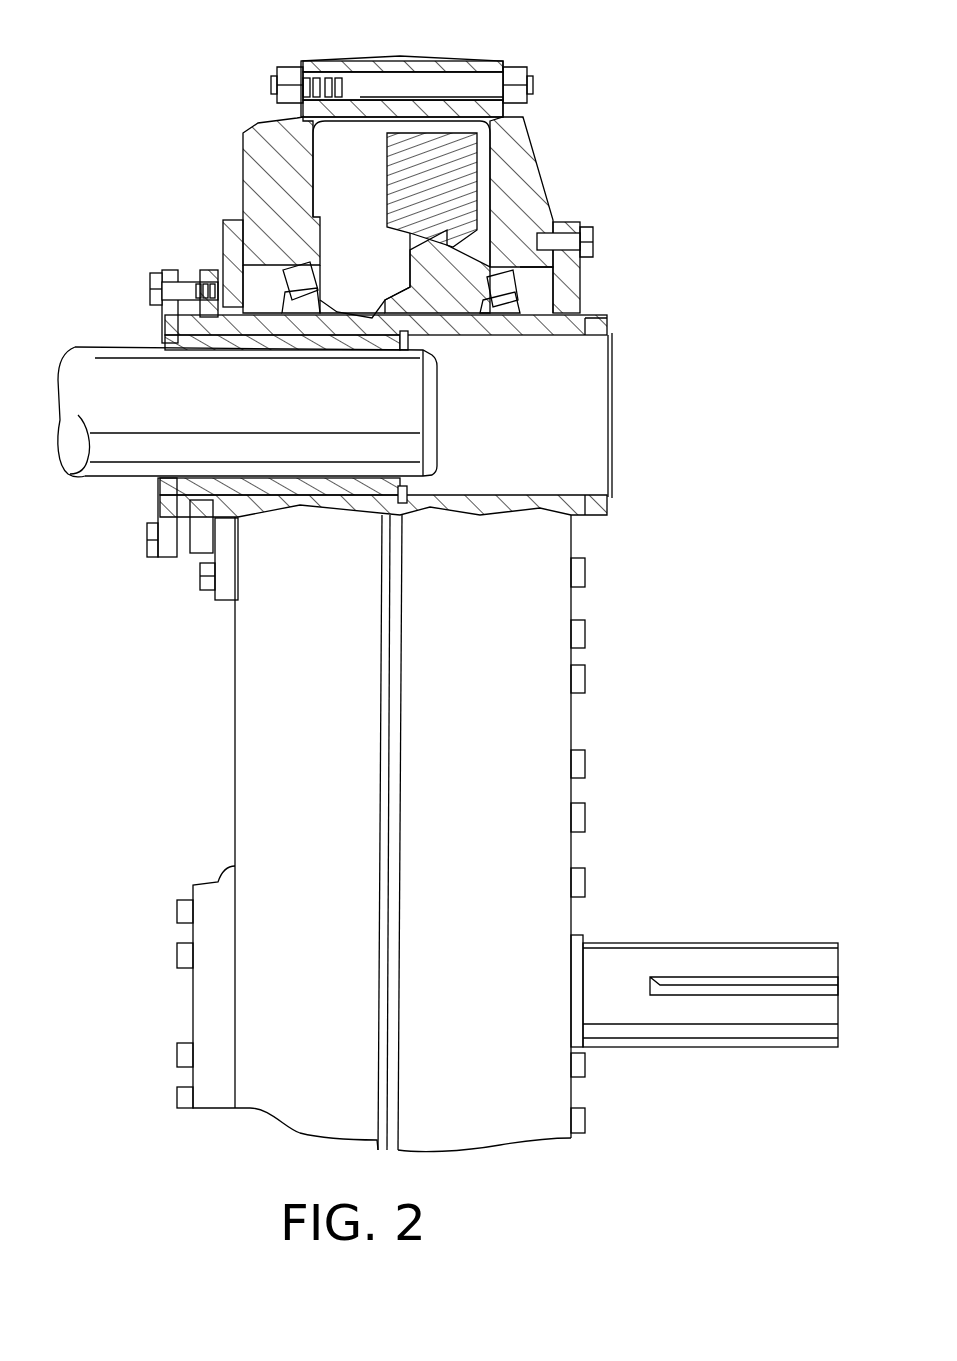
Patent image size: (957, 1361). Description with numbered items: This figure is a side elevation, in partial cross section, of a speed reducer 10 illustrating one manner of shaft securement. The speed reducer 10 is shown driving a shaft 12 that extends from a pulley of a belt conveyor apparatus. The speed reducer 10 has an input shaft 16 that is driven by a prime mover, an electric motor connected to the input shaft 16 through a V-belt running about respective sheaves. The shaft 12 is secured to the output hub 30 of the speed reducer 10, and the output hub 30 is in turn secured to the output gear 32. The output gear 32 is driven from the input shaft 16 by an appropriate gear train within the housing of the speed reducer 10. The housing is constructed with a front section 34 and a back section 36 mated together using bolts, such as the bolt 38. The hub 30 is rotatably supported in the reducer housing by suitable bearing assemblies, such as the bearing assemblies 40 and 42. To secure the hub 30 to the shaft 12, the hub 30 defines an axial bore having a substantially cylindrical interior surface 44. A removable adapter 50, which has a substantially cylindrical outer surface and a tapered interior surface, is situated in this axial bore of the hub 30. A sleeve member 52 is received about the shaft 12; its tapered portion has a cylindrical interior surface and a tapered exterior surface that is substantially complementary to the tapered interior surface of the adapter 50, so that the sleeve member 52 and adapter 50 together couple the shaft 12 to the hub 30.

The speed reducer 10 is at (190, 790).
The shaft 12 is at (435, 405).
The input shaft 16 is at (775, 955).
The output hub 30 is at (340, 312).
The output gear 32 is at (383, 205).
The front section 34 is at (545, 725).
The back section 36 is at (270, 730).
The bolt 38 is at (458, 88).
The bearing assembly 40 is at (300, 290).
The bearing assembly 42 is at (497, 290).
The interior surface 44 is at (585, 418).
The adapter 50 is at (410, 340).
The sleeve member 52 is at (158, 332).